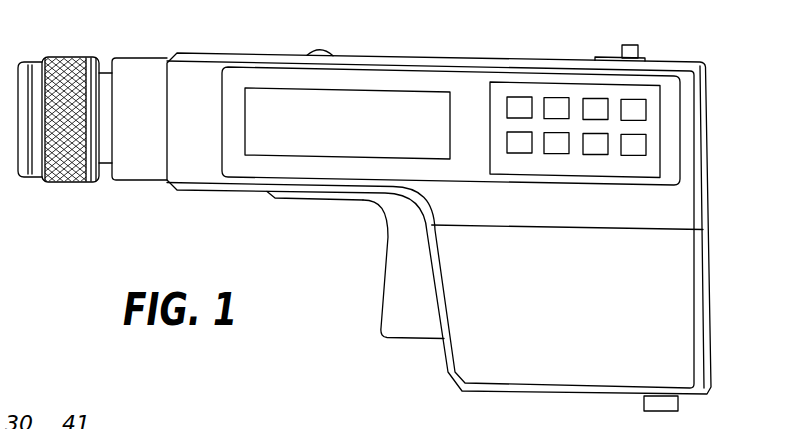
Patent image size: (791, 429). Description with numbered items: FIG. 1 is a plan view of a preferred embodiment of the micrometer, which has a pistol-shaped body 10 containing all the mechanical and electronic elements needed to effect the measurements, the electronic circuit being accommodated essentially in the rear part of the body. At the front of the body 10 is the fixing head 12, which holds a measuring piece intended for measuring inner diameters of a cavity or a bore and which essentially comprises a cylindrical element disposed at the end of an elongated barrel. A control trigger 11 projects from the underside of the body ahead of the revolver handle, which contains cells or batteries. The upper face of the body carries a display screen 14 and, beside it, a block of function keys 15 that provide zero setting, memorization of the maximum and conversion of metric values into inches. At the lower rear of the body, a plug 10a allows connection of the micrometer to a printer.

The pistol-shaped body 10 is at (483, 340).
The plug 10a is at (650, 402).
The control trigger 11 is at (397, 298).
The fixing head 12 is at (68, 68).
The display screen 14 is at (387, 107).
The block of function keys 15 is at (537, 90).